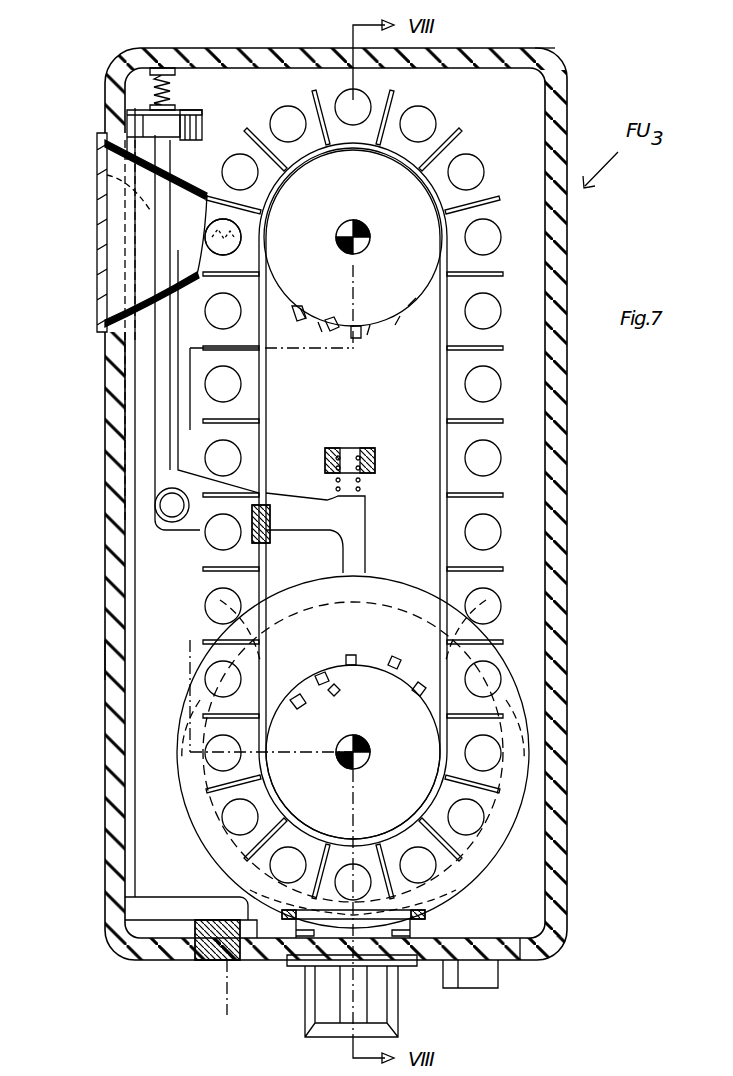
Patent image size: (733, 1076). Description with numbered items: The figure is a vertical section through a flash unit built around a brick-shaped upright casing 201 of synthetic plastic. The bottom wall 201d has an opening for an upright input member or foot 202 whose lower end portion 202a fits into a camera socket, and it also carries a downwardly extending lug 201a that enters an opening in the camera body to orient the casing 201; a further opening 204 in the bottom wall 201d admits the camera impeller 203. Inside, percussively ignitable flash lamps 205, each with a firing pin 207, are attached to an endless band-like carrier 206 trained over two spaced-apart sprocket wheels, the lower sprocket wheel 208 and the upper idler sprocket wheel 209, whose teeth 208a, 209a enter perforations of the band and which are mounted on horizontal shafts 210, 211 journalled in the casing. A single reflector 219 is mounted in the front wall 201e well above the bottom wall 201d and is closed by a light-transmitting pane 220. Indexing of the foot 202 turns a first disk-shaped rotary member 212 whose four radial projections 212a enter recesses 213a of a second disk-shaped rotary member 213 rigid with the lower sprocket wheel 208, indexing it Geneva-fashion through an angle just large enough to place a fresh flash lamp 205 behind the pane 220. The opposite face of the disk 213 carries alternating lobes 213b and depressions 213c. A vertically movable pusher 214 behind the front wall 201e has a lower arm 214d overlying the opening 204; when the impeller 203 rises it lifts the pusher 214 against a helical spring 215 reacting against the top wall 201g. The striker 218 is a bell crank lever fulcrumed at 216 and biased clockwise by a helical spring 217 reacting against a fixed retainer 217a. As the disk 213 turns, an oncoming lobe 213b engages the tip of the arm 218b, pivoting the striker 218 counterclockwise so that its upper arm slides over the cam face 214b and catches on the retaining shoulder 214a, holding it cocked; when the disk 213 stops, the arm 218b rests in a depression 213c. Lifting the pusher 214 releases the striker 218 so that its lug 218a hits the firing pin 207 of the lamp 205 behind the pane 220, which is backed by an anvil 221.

The casing 201 is at (568, 432).
The projection or lug 201a is at (488, 988).
The bottom wall 201d is at (517, 962).
The front wall 201e is at (106, 656).
The top wall 201g is at (531, 50).
The input member or foot 202 is at (431, 916).
The lower end portion of the foot 202a is at (397, 1007).
The impeller 203 is at (221, 1000).
The opening 204 is at (226, 940).
The flash lamp 205 is at (226, 180).
The endless band-like carrier 206 is at (444, 434).
The firing pin 207 is at (219, 372).
The lower sprocket wheel 208 is at (386, 680).
The teeth of the lower sprocket wheel 208a is at (326, 680).
The upper sprocket wheel 209 is at (402, 318).
The teeth of the upper sprocket wheel 209a is at (333, 314).
The shaft 210 is at (371, 749).
The shaft 211 is at (366, 248).
The first disk-shaped rotary member 212 is at (419, 914).
The projections 212a is at (291, 966).
The second disk-shaped rotary member 213 is at (513, 838).
The recesses 213a is at (533, 792).
The projections or lobes 213b is at (531, 706).
The depressions or valleys 213c is at (531, 750).
The motion transmitting member or pusher 214 is at (137, 566).
The retaining shoulder 214a is at (179, 118).
The cam face 214b is at (206, 125).
The arm 214d is at (181, 895).
The helical spring 215 is at (150, 80).
The fulcrum 216 is at (160, 505).
The helical spring 217 is at (338, 487).
The fixed retainer 217a is at (375, 465).
The striker 218 is at (155, 387).
The projection or lug 218a is at (100, 185).
The arm of the striker 218b is at (338, 540).
The reflector 219 is at (98, 290).
The light-transmitting pane 220 is at (100, 192).
The back support or anvil 221 is at (243, 240).